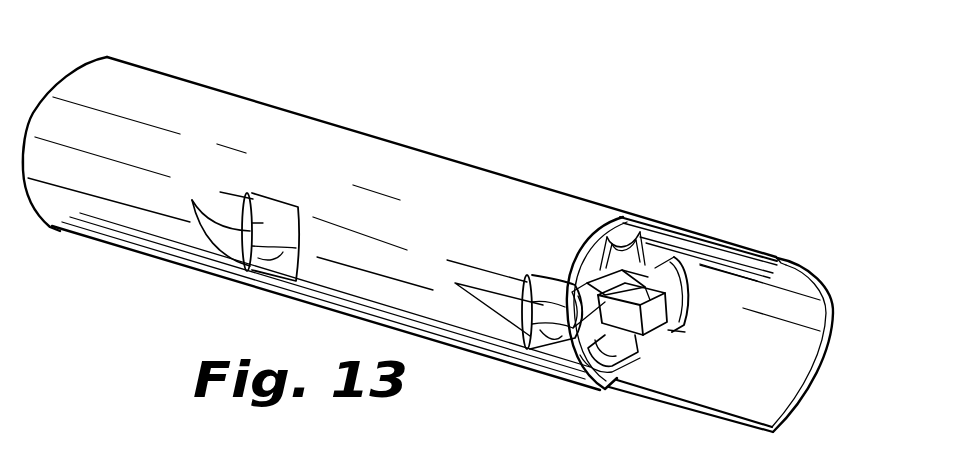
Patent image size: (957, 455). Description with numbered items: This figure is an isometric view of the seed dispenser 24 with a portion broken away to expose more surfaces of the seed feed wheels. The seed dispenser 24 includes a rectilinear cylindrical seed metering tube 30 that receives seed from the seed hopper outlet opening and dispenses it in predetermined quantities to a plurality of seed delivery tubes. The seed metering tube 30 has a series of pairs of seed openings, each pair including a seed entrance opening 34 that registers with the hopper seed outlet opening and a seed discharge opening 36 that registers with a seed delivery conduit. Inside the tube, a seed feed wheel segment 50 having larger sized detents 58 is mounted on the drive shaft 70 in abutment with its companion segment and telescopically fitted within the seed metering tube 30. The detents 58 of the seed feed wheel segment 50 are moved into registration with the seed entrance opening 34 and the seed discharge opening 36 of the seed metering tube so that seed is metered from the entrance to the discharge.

The seed dispenser 24 is at (318, 74).
The seed metering tube 30 is at (484, 161).
The seed entrance opening 34 is at (283, 210).
The seed discharge opening 36 is at (676, 256).
The seed feed wheel segment 50 is at (278, 258).
The larger sized detents 58 is at (362, 252).
The drive shaft 70 is at (658, 321).